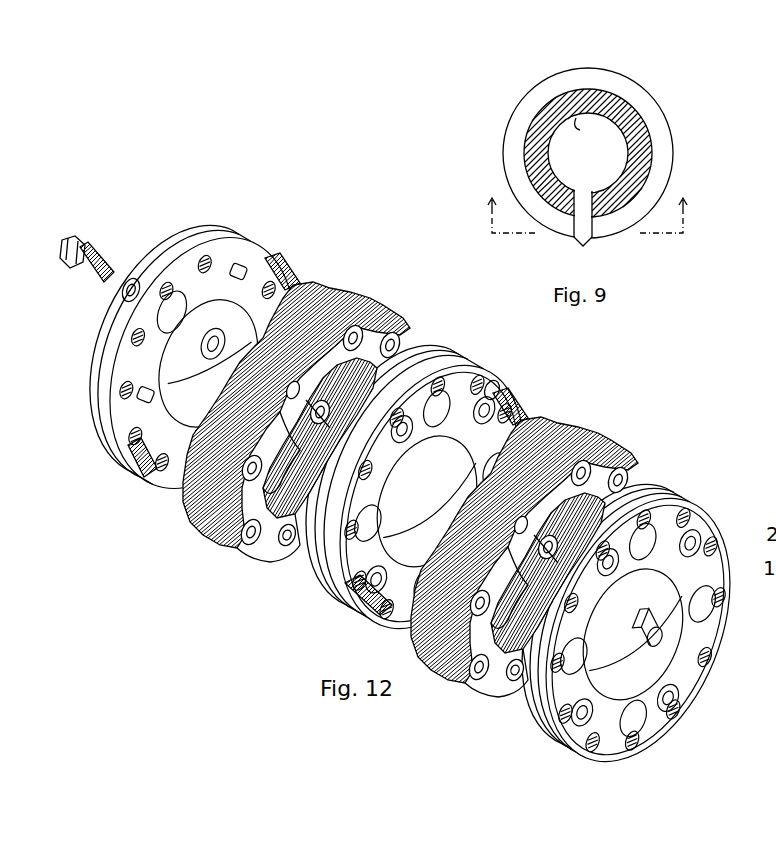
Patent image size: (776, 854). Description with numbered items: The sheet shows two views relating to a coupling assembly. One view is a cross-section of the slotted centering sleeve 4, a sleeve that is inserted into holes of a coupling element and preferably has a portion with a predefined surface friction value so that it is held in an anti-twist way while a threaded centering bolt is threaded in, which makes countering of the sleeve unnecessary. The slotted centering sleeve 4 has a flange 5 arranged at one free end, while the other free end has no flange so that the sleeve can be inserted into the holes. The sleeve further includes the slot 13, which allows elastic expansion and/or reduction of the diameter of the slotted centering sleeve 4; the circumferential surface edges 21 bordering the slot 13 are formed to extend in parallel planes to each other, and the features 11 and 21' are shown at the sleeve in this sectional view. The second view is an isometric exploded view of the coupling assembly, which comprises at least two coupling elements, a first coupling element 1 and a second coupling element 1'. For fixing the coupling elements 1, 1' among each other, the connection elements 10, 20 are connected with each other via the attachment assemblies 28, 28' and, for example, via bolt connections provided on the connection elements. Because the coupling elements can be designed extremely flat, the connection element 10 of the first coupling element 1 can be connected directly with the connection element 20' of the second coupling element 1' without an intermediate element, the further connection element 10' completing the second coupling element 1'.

In FIG. 12, the coupling element 1 is at (310, 422).
In FIG. 12, the second coupling element 1' is at (516, 598).
In FIG. 9, the slotted centering sleeve 4 is at (586, 158).
In FIG. 9, the flange 5 is at (556, 84).
In FIG. 12, the connection element 10 is at (431, 473).
In FIG. 12, the connection element 10' is at (637, 615).
In FIG. 9, the inner contour 11 is at (578, 126).
In FIG. 9, the slot 13 is at (586, 244).
In FIG. 12, the connection element 20 is at (194, 343).
In FIG. 12, the connection element 20' is at (513, 363).
In FIG. 9, the circumferential surface edges 21 is at (588, 153).
In FIG. 9, the slot 21' is at (549, 240).
In FIG. 12, the attachment assembly 28 is at (314, 407).
In FIG. 12, the elastic element 28' is at (452, 542).